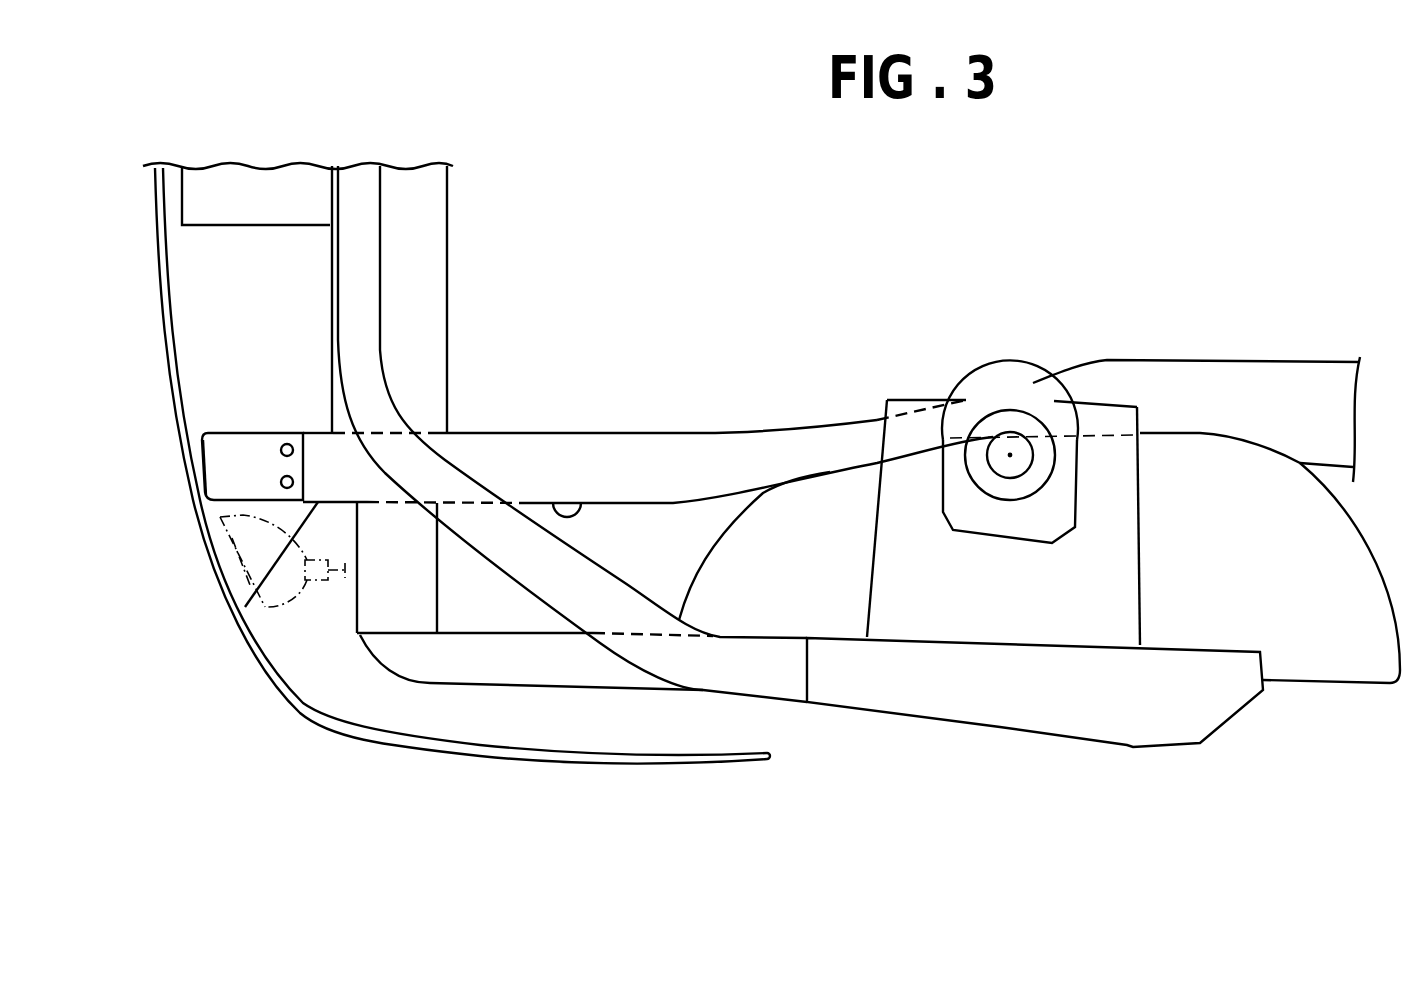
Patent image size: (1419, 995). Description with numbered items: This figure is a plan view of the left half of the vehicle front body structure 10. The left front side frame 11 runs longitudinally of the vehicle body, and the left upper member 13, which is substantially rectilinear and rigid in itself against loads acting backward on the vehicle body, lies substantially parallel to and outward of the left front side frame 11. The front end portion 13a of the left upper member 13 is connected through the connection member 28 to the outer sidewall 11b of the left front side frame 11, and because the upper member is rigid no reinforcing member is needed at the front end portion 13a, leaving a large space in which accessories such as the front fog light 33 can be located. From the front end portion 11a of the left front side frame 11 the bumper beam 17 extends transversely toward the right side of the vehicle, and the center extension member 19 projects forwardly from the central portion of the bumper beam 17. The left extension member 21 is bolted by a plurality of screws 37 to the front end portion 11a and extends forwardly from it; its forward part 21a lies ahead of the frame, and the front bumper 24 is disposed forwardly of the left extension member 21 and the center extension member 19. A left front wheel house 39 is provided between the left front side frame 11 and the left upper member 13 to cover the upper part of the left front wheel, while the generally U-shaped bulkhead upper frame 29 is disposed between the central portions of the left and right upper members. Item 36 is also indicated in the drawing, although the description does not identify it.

The vehicle front body structure 10 is at (563, 168).
The left front side frame 11 is at (697, 430).
The front end portion of the left front side frame 11a is at (230, 580).
The outer sidewall of the left front side frame 11b is at (583, 500).
The left upper member 13 is at (811, 769).
The front end portion of the left upper member 13a is at (407, 660).
The bumper beam 17 is at (423, 260).
The center extension member 19 is at (192, 192).
The left extension member 21 is at (252, 482).
The bracket flange 21a is at (202, 465).
The front bumper 24 is at (162, 355).
The connection member 28 is at (430, 577).
The bulkhead upper frame 29 is at (550, 587).
The front fog light 33 is at (230, 574).
The movement direction 36 is at (342, 605).
The screws 37 is at (295, 480).
The left front wheel house 39 is at (842, 495).